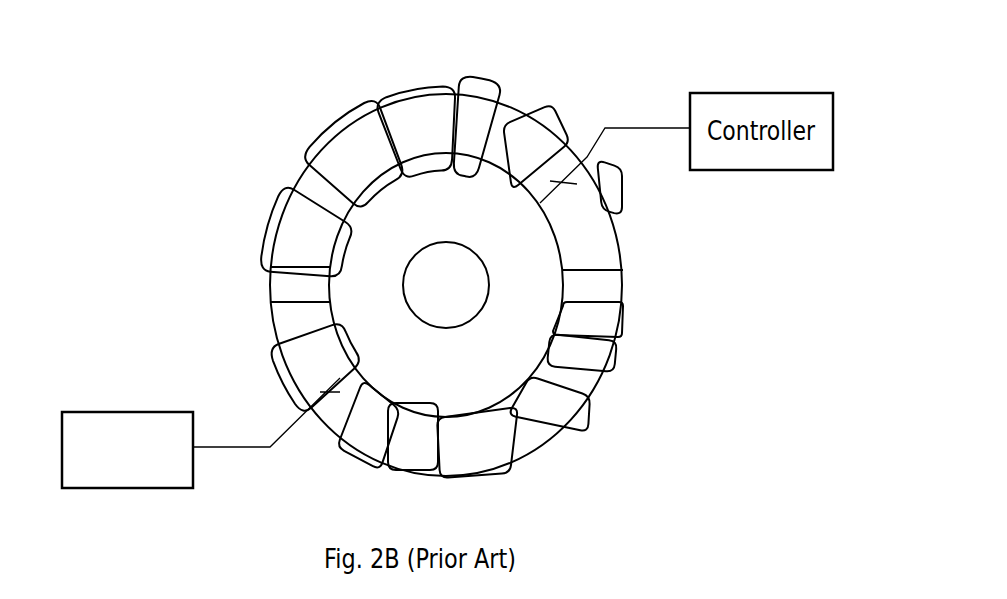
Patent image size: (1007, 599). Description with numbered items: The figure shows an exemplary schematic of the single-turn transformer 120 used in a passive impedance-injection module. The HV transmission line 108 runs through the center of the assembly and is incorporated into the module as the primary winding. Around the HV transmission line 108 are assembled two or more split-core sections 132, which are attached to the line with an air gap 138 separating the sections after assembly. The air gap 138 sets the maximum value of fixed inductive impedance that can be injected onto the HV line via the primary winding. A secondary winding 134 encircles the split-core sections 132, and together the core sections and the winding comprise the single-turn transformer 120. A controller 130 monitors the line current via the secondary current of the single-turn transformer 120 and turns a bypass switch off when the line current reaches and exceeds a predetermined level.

The single-turn transformer 120 is at (336, 61).
The split-core sections 132 is at (416, 131).
The secondary winding 134 is at (510, 112).
The air gap 138 is at (590, 286).
The HV transmission line 108 is at (446, 285).
The controller 130 is at (178, 488).